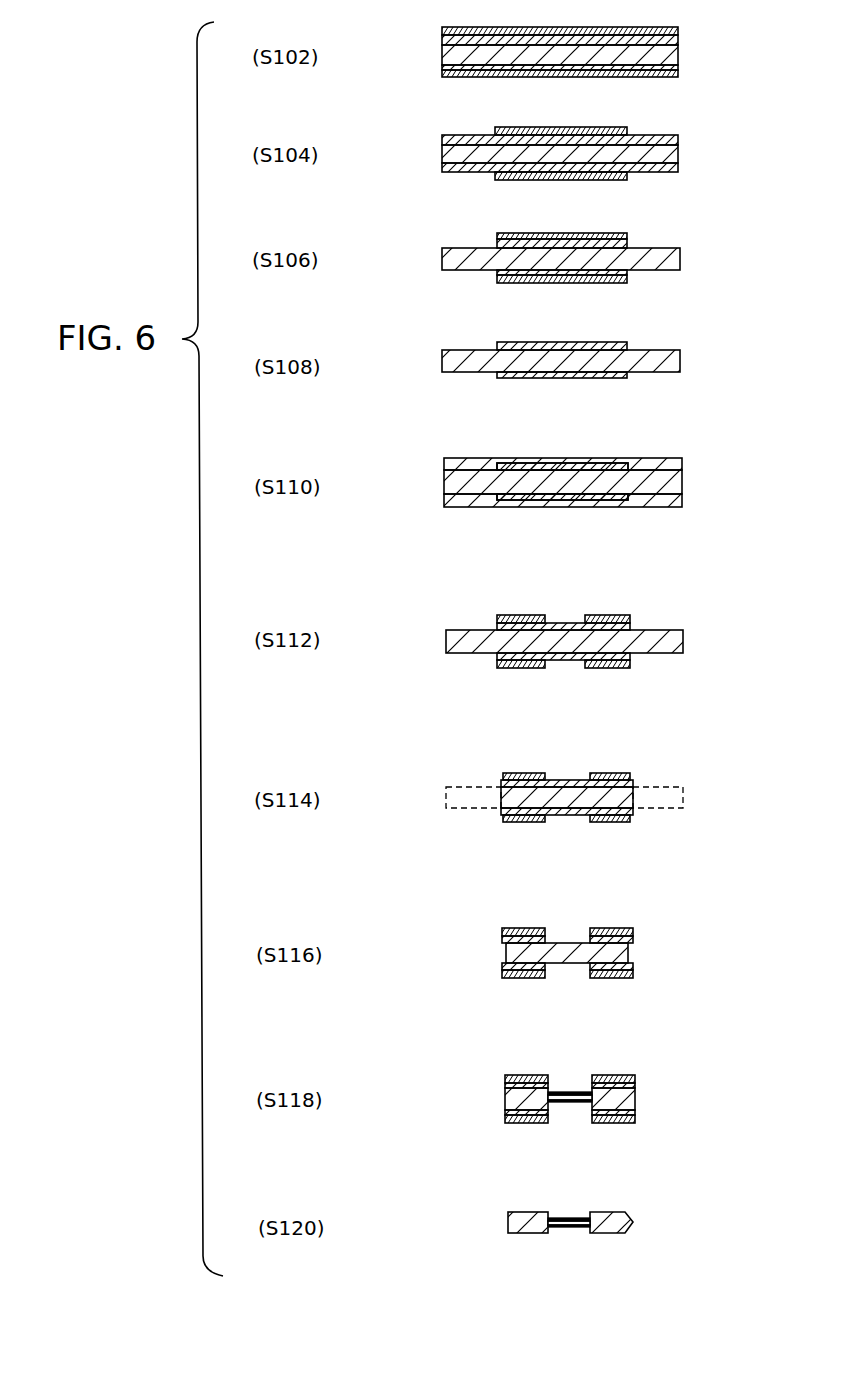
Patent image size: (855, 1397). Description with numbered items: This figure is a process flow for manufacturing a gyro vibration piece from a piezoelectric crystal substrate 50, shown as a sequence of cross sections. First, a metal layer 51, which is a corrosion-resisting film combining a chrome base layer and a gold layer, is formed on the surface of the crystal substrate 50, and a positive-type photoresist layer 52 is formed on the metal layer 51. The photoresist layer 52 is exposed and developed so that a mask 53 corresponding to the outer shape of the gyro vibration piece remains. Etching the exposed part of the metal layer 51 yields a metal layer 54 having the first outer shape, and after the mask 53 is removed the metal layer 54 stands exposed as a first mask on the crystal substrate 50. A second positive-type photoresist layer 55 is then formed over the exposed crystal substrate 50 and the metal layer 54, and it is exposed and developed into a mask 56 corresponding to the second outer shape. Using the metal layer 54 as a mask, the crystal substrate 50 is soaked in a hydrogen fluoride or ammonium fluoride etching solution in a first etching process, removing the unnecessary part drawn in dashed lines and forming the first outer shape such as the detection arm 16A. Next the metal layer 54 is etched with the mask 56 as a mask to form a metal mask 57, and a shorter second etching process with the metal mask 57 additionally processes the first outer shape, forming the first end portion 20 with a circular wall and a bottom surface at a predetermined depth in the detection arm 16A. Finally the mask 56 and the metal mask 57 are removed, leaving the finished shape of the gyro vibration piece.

The crystal substrate 50 is at (680, 54).
The metal layer 51 is at (442, 68).
The positive-type photoresist layer 52 is at (678, 30).
The mask 53 is at (627, 130).
The metal layer 54 is at (497, 244).
The positive-type photoresist layer 55 is at (444, 500).
The mask 56 is at (528, 614).
The metal mask 57 is at (502, 966).
The detection arm 16A is at (512, 797).
The first end portion 20 is at (565, 1092).